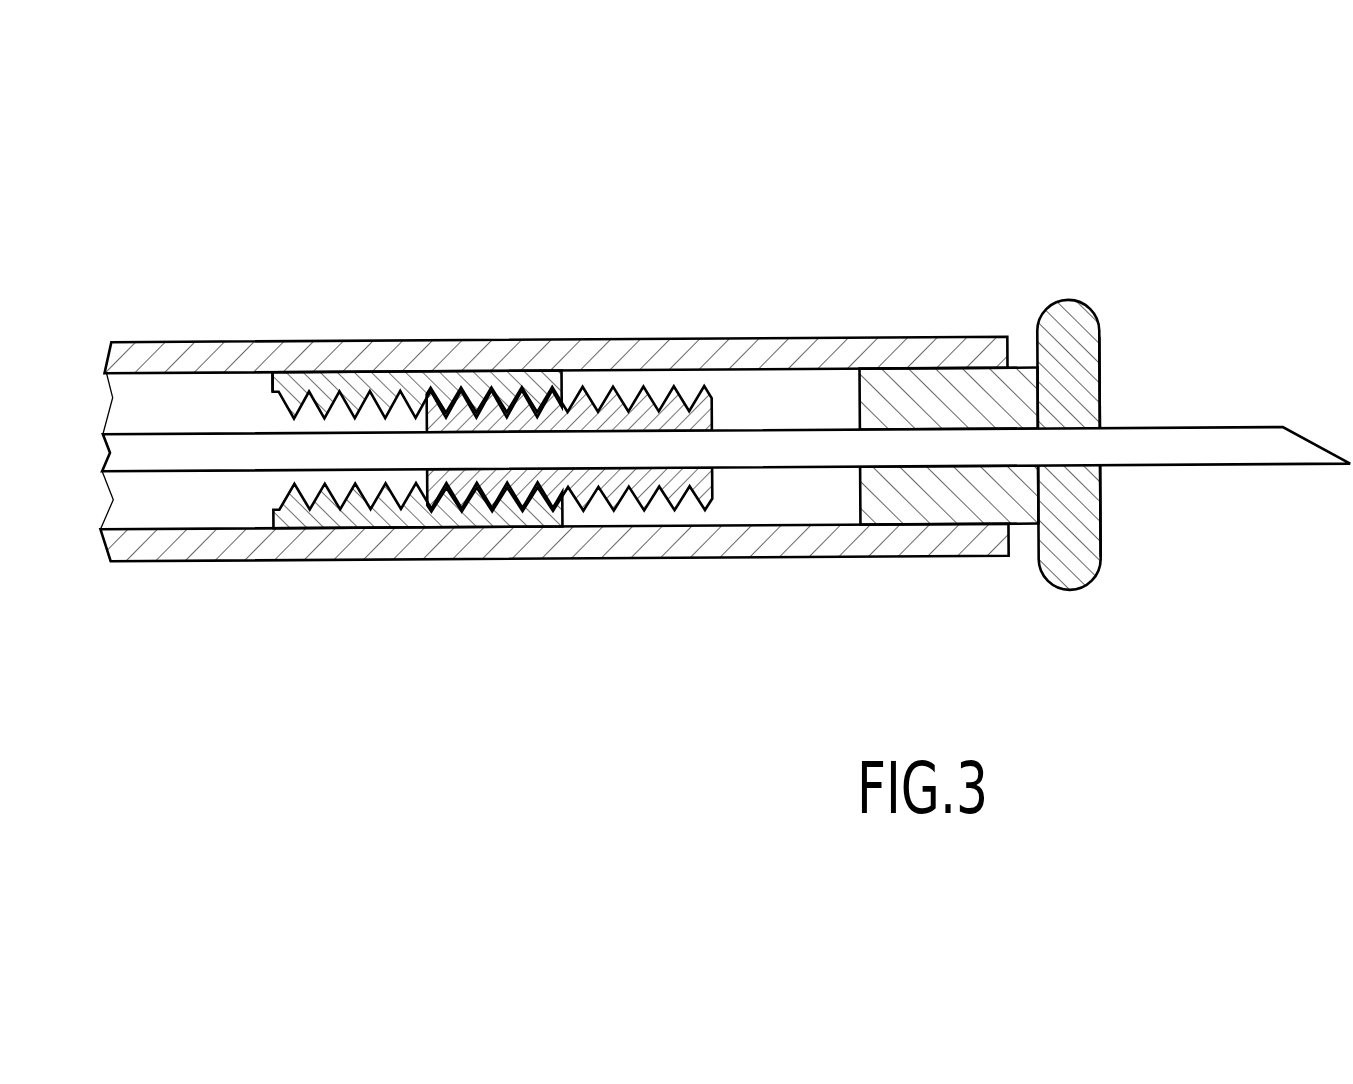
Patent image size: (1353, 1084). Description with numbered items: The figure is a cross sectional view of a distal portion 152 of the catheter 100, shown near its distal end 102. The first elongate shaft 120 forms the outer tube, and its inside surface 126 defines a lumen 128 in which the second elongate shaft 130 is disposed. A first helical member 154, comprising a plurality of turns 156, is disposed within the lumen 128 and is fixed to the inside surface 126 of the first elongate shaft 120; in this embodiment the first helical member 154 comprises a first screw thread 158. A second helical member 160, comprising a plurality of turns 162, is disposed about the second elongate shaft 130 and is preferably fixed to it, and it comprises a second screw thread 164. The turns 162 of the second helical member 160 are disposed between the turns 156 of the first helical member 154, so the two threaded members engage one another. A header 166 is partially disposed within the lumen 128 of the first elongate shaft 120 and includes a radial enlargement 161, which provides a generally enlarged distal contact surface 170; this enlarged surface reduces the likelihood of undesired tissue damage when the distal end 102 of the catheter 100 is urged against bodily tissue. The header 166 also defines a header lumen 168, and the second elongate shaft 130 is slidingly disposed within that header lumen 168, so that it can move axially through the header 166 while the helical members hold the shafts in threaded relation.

The catheter 100 is at (690, 497).
The distal end 102 is at (1040, 489).
The first elongate shaft 120 is at (943, 545).
The inside surface 126 is at (172, 386).
The lumen 128 is at (797, 497).
The second elongate shaft 130 is at (1182, 437).
The distal portion 152 is at (493, 525).
The first helical member 154 is at (415, 382).
The turns of first helical member 156 is at (297, 482).
The first screw thread 158 is at (258, 417).
The second helical member 160 is at (629, 462).
The radial enlargement 161 is at (1083, 287).
The turns of second helical member 162 is at (648, 395).
The second screw thread 164 is at (689, 517).
The header 166 is at (945, 392).
The header lumen 168 is at (1033, 467).
The distal contact surface 170 is at (1118, 504).